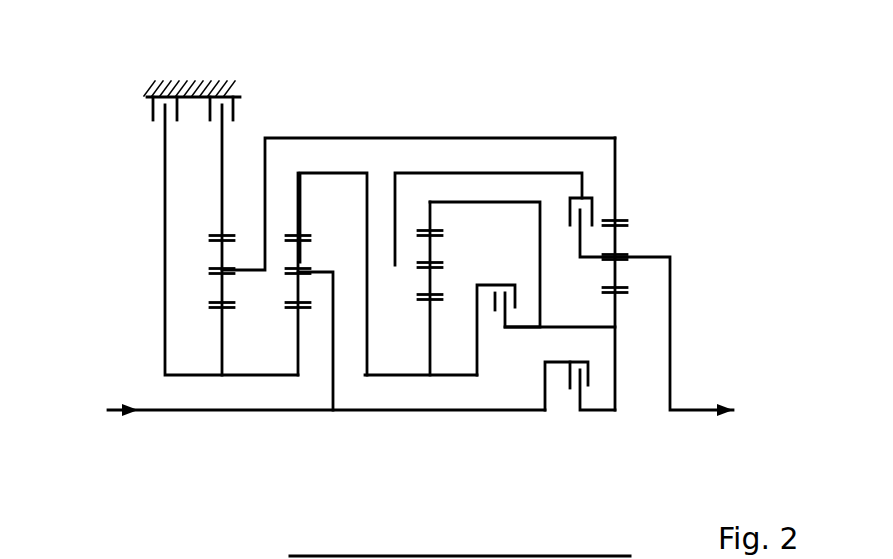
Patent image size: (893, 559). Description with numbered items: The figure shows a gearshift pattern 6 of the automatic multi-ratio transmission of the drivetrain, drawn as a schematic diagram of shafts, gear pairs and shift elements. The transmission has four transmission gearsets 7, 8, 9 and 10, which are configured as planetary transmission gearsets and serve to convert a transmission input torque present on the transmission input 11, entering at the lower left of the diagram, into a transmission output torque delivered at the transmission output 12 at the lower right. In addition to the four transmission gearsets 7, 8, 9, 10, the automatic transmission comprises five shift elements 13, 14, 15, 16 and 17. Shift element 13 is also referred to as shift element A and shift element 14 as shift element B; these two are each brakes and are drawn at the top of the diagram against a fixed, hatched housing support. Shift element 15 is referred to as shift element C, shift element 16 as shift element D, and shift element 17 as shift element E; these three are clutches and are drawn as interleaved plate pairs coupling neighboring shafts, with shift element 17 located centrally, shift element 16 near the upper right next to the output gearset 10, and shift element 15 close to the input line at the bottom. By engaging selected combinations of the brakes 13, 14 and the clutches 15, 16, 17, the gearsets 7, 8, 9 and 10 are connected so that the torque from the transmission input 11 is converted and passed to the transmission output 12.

The gearshift pattern 6 is at (130, 293).
The transmission gearset 7 is at (230, 210).
The transmission gearset 8 is at (313, 212).
The transmission gearset 9 is at (416, 310).
The transmission gearset 10 is at (632, 200).
The transmission input 11 is at (180, 411).
The transmission output 12 is at (695, 412).
The shift element 13 is at (135, 88).
The shift element 14 is at (258, 88).
The shift element 15 is at (570, 402).
The shift element 16 is at (592, 172).
The shift element 17 is at (496, 262).